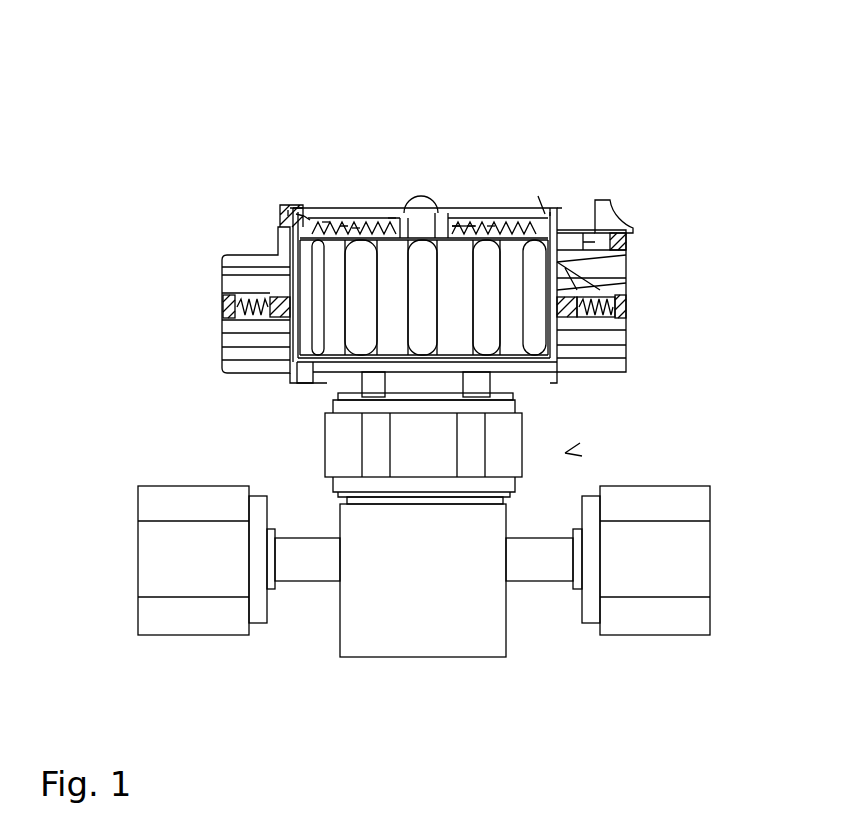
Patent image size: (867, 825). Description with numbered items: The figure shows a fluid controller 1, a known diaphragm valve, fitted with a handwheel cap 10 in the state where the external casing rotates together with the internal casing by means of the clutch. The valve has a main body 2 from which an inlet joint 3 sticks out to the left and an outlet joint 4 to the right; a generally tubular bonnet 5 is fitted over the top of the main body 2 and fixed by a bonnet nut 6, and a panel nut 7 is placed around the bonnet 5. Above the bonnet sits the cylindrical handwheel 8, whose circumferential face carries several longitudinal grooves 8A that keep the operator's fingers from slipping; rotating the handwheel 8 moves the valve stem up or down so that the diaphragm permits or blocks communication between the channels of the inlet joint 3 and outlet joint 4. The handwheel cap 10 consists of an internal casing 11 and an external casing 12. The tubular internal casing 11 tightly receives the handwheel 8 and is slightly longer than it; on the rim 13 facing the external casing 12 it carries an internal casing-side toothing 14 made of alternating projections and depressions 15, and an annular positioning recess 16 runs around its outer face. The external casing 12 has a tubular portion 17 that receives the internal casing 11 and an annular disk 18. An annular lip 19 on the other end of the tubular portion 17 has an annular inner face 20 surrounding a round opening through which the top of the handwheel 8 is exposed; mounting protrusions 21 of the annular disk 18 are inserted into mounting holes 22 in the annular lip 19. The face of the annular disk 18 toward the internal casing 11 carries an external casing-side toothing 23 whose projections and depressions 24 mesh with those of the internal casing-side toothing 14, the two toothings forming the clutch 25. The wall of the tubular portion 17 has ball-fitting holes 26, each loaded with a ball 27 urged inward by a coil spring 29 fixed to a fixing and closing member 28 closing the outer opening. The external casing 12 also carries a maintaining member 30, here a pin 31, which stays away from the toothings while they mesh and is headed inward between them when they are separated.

The fluid controller 1 is at (567, 452).
The main body 2 is at (430, 665).
The inlet joint 3 is at (135, 555).
The outlet joint 4 is at (700, 556).
The bonnet 5 is at (460, 372).
The bonnet nut 6 is at (333, 445).
The panel nut 7 is at (425, 387).
The handwheel 8 is at (327, 303).
The longitudinal grooves 8A is at (360, 372).
The handwheel cap 10 is at (524, 152).
The internal casing 11 is at (585, 342).
The external casing 12 is at (618, 277).
The rim 13 is at (491, 226).
The internal casing-side toothing 14 is at (471, 226).
The projections and depressions 15 is at (356, 228).
The positioning recess 16 is at (585, 268).
The tubular portion 17 is at (250, 268).
The annular disk 18 is at (290, 222).
The annular lip 19 is at (306, 216).
The annular inner face 20 is at (326, 222).
The mounting protrusions 21 is at (296, 214).
The mounting holes 22 is at (290, 210).
The external casing-side toothing 23 is at (343, 226).
The projections and depressions 24 is at (392, 218).
The clutch 25 is at (453, 55).
The ball-fitting holes 26 is at (255, 320).
The ball 27 is at (250, 345).
The fixing and closing member 28 is at (222, 320).
The coil spring 29 is at (227, 310).
The maintaining member 30 is at (662, 209).
The pin 31 is at (622, 242).